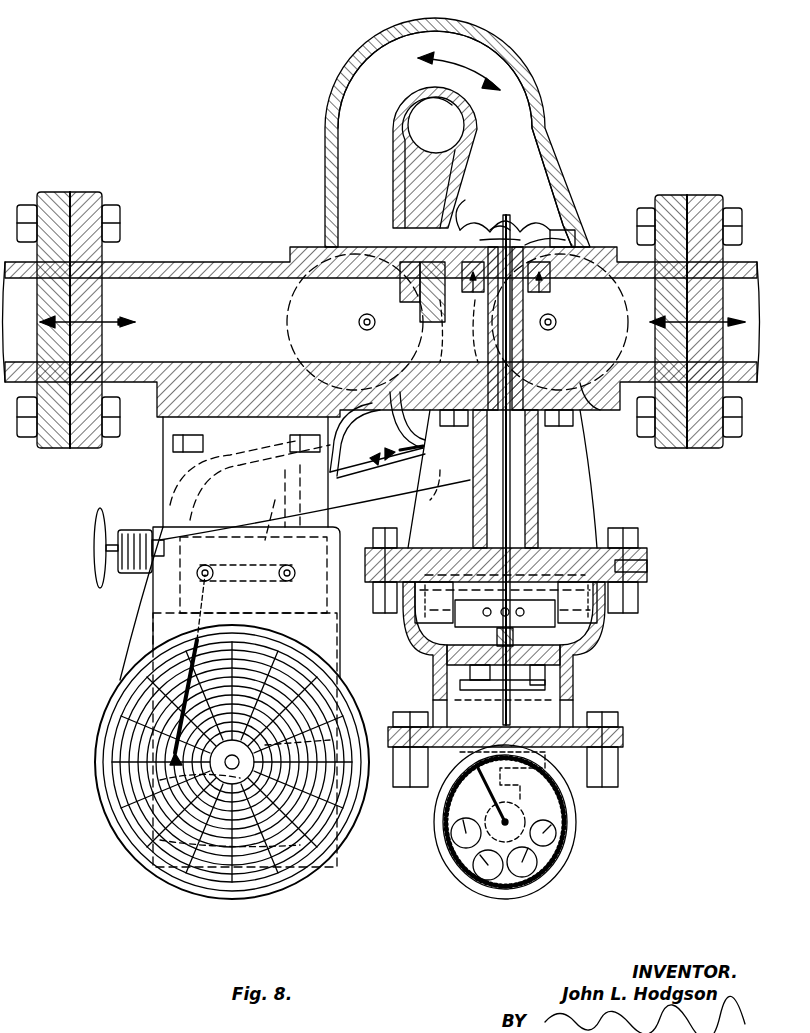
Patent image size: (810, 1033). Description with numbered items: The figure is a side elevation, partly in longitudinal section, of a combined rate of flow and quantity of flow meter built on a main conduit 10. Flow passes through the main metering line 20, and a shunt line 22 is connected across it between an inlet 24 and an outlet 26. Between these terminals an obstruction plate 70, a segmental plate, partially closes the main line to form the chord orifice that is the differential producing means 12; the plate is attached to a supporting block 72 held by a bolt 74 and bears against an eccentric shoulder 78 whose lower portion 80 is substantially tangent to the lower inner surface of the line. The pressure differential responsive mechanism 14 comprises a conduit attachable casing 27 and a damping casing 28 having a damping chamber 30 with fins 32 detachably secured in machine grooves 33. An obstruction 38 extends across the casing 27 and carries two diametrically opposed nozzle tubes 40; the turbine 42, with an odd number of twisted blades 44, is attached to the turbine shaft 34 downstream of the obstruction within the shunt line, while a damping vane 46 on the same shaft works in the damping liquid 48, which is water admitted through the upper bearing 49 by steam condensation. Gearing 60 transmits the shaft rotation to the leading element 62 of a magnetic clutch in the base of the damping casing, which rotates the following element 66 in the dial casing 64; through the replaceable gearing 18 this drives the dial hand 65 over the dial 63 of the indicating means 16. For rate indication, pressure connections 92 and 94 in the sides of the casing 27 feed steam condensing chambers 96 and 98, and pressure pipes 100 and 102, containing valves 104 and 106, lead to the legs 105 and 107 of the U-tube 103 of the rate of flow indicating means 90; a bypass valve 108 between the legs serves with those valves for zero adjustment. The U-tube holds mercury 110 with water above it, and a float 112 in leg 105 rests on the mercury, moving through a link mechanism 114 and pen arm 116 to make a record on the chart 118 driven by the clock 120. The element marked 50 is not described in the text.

The main conduit 10 is at (10, 262).
The differential producing means 12 is at (440, 355).
The pressure differential responsive mechanism 14 is at (590, 470).
The indicating means 16 is at (576, 865).
The gearing 18 is at (560, 810).
The main metering line 20 is at (172, 262).
The shunt line 22 is at (540, 72).
The inlet 24 is at (560, 280).
The outlet 26 is at (350, 292).
The casing 27 is at (580, 430).
The damping casing 28 is at (600, 500).
The damping chamber 30 is at (650, 560).
The fins 32 is at (410, 640).
The machine grooves 33 is at (430, 620).
The turbine shaft 34 is at (510, 460).
The obstruction 38 is at (565, 230).
The nozzle tubes 40 is at (540, 270).
The turbine 42 is at (540, 240).
The blades 44 is at (500, 210).
The damping vane 46 is at (560, 640).
The damping liquid 48 is at (565, 560).
The upper bearing 49 is at (470, 235).
The valve head 50 is at (510, 232).
The gearing 60 is at (575, 676).
The leading element 62 is at (580, 727).
The dial 63 is at (470, 875).
The dial casing 64 is at (450, 845).
The dial hand 65 is at (466, 818).
The following element 66 is at (545, 780).
The obstruction plate 70 is at (460, 342).
The supporting block 72 is at (425, 305).
The bolt 74 is at (405, 270).
The shoulder 78 is at (410, 285).
The lower portion 80 is at (395, 387).
The rate of flow indicating means 90 is at (290, 893).
The pressure connection 92 is at (556, 326).
The pressure connection 94 is at (360, 330).
The steam condensing chamber 96 is at (580, 398).
The steam condensing chamber 98 is at (285, 312).
The pressure pipe 100 is at (402, 469).
The pressure pipe 102 is at (260, 458).
The U-tube 103 is at (315, 510).
The valve 104 is at (377, 448).
The leg 105 is at (440, 650).
The valve 106 is at (215, 470).
The leg 107 is at (155, 618).
The bypass valve 108 is at (94, 565).
The mercury 110 is at (338, 835).
The float 112 is at (335, 740).
The link mechanism 114 is at (273, 513).
The pen arm 116 is at (170, 665).
The chart 118 is at (130, 790).
The clock 120 is at (160, 860).